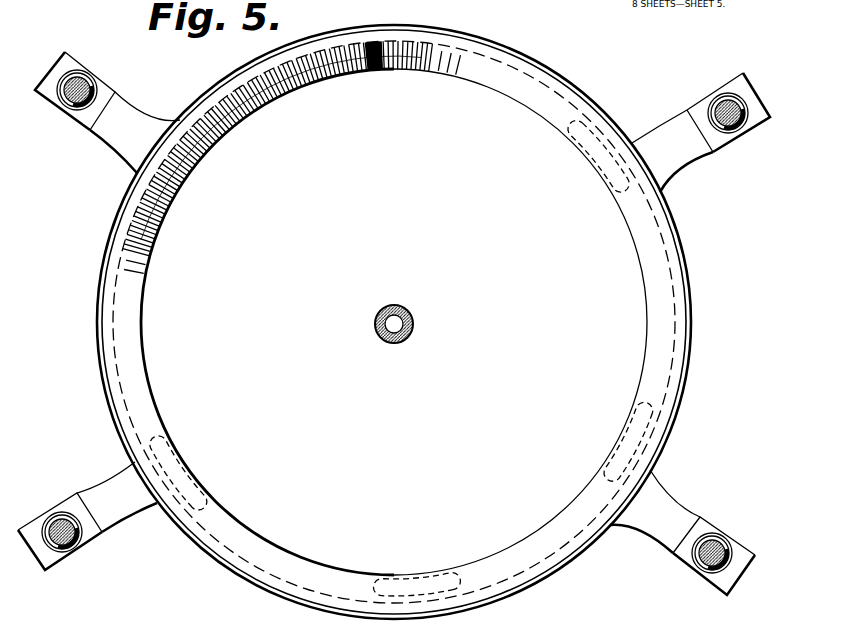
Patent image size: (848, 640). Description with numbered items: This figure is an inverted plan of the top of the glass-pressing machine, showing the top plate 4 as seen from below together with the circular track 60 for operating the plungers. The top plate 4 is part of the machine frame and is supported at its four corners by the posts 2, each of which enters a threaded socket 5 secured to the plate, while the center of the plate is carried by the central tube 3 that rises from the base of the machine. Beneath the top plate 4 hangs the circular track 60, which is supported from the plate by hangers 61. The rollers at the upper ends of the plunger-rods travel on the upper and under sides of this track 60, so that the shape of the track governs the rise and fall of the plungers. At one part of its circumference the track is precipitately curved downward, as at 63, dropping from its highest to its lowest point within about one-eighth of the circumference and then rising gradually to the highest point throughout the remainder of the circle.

The upright or post 2 is at (84, 80).
The tube 3 is at (411, 314).
The top plate 4 is at (580, 93).
The threaded socket 5 is at (72, 110).
The circular track 60 is at (655, 283).
The hanger 61 is at (598, 158).
The downward curve of track 63 is at (298, 82).